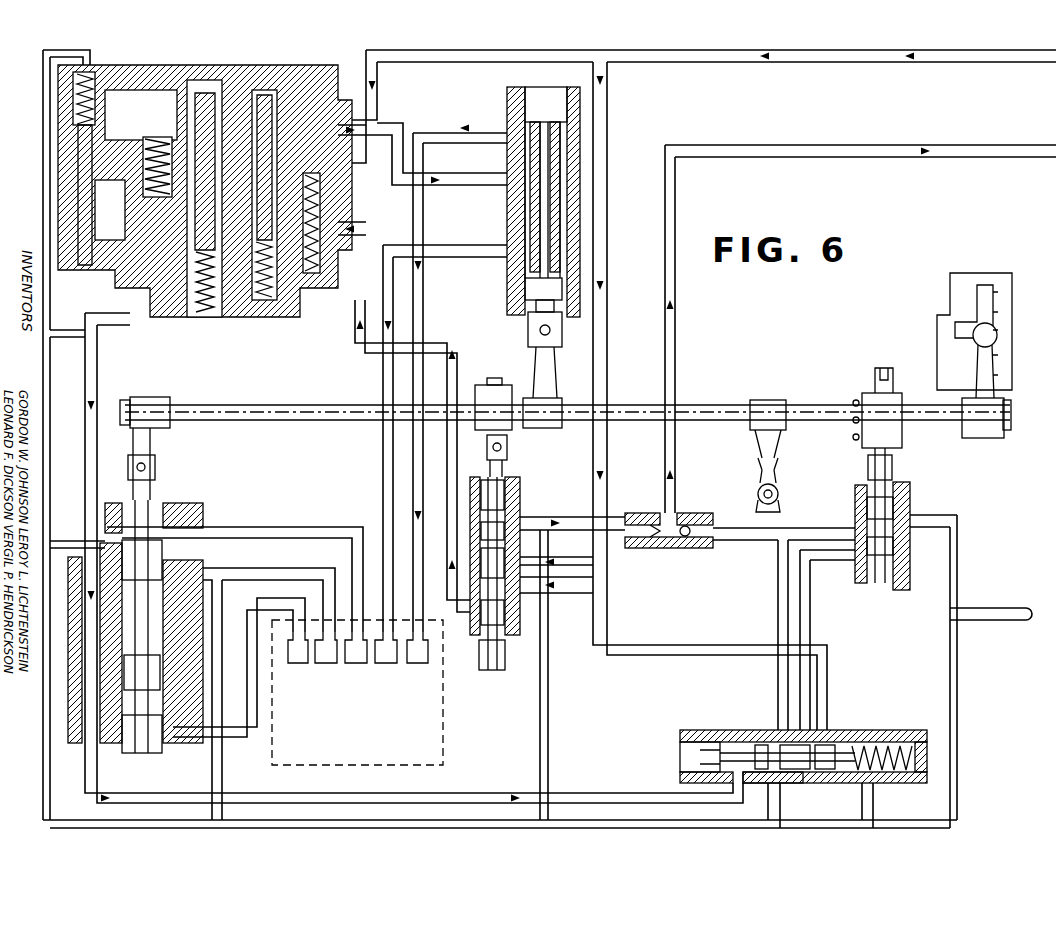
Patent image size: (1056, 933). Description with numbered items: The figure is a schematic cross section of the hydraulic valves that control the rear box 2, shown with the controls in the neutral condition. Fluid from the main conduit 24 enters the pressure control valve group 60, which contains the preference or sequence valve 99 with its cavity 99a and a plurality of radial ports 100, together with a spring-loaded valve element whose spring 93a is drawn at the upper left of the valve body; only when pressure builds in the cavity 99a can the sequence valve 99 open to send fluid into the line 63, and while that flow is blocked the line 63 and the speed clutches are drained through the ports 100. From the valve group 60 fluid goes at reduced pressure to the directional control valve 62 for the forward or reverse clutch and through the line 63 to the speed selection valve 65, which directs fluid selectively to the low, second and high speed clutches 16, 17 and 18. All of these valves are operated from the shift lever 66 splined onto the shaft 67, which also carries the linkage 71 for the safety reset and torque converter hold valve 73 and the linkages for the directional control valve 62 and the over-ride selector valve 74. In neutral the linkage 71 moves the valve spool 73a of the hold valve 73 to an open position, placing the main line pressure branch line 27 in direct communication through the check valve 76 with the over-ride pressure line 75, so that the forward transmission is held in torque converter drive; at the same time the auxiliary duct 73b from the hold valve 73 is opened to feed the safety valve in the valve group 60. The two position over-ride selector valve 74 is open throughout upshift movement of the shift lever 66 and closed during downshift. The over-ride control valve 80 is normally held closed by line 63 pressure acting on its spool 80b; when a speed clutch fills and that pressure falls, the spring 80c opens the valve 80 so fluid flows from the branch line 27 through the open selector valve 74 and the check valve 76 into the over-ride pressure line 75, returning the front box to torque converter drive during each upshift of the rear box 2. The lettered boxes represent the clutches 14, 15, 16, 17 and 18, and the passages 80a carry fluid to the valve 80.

The rear box 2 is at (452, 730).
The forward clutch 14 is at (415, 665).
The reverse clutch 15 is at (383, 665).
The low speed clutch 16 is at (292, 665).
The second speed clutch 17 is at (350, 665).
The high speed clutch 18 is at (320, 665).
The main conduit 24 is at (840, 62).
The branch line 27 is at (607, 138).
The pressure control valve group 60 is at (296, 70).
The directional control valve 62 is at (505, 97).
The line to speed selection valve 63 is at (97, 363).
The speed selection valve 65 is at (205, 507).
The shift lever 66 is at (995, 333).
The shaft 67 is at (690, 412).
The linkage 71 is at (510, 457).
The safety reset and torque converter hold valve 73 is at (520, 633).
The valve spool 73a is at (517, 492).
The auxiliary duct 73b is at (362, 350).
The over-ride selector valve 74 is at (912, 496).
The over-ride pressure line 75 is at (952, 152).
The check valve 76 is at (690, 514).
The over-ride control valve 80 is at (828, 735).
The relief valve inlet passages 80a is at (812, 630).
The spool 80b is at (802, 782).
The spring 80c is at (928, 748).
The regulator valve spring 93a is at (60, 95).
The preference or sequence valve 99 is at (242, 76).
The cavity 99a is at (205, 100).
The radial ports 100 is at (183, 284).